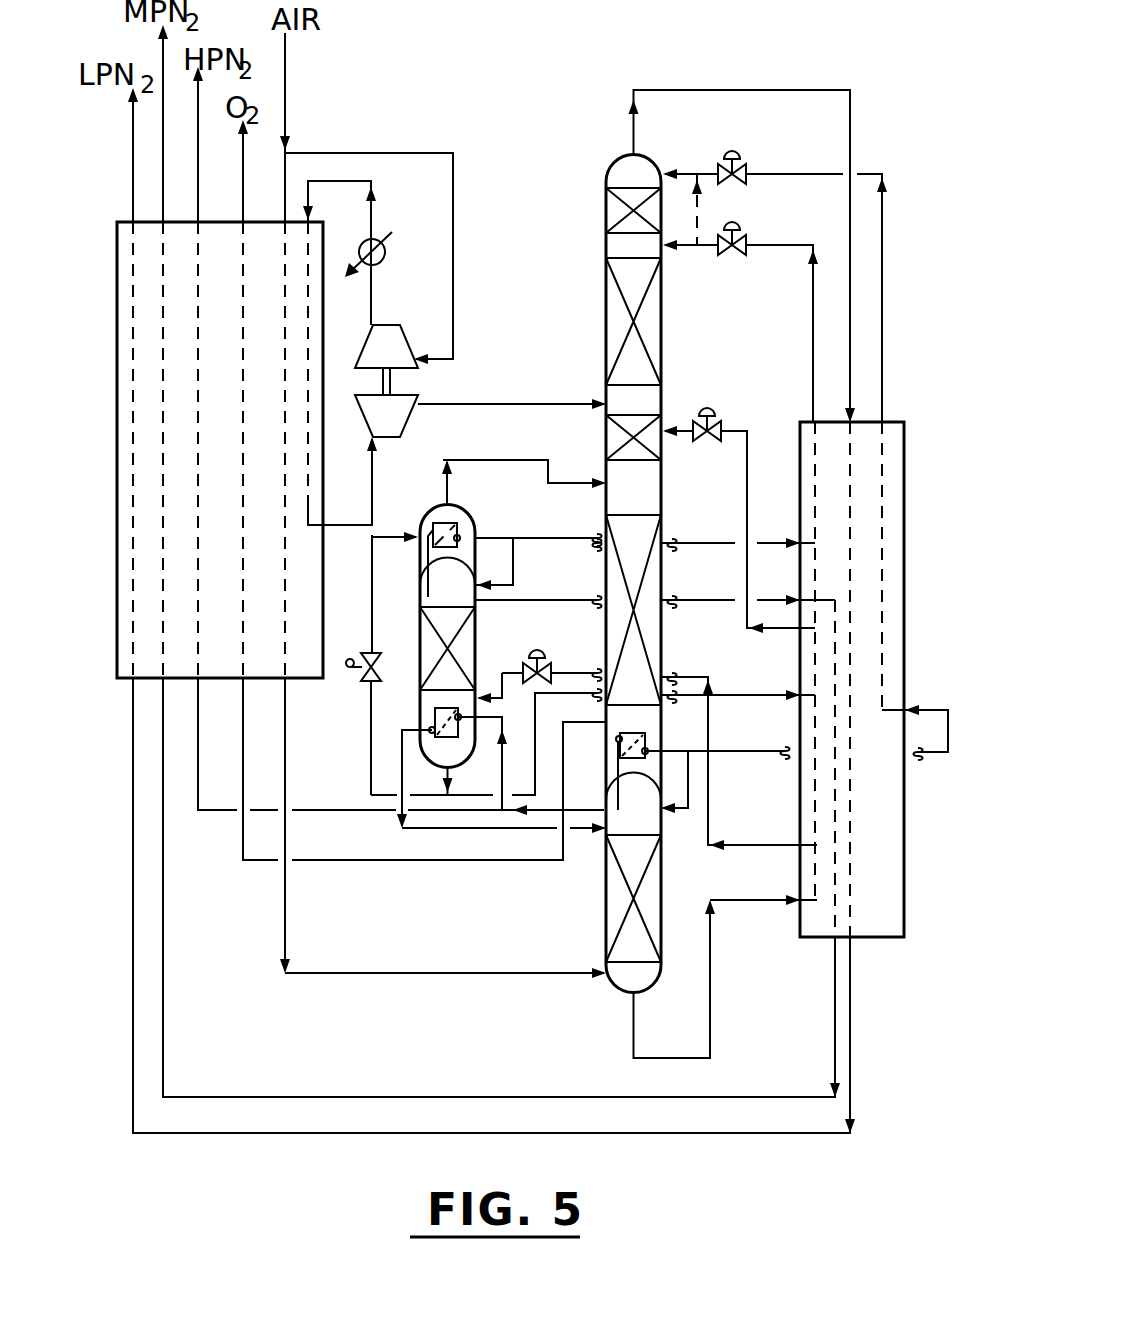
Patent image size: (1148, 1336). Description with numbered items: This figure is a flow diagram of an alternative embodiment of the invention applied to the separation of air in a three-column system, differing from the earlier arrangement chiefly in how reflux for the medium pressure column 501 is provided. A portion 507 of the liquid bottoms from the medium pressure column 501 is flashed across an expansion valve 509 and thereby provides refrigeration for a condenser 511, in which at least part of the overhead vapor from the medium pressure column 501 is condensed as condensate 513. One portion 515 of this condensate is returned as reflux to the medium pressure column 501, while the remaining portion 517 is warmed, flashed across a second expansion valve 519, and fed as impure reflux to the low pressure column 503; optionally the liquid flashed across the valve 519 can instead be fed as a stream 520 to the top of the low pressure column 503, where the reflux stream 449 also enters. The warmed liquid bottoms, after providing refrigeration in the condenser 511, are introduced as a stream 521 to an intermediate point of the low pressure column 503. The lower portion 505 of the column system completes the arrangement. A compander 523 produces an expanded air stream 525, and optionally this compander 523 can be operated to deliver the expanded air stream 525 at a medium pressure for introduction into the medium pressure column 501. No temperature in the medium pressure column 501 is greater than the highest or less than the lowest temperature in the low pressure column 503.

The reflux stream 449 is at (882, 345).
The medium pressure column 501 is at (478, 655).
The low pressure column 503 is at (661, 352).
The lower section of column 505 is at (604, 918).
The portion of liquid bottoms 507 is at (372, 776).
The expansion valve 509 is at (361, 676).
The condenser 511 is at (450, 520).
The condensate 513 is at (492, 540).
The portion of condensate 515 is at (513, 570).
The remaining portion of condensate 517 is at (697, 543).
The expansion valve 519 is at (735, 260).
The stream 520 is at (697, 212).
The stream 521 is at (518, 460).
The compander 523 is at (442, 385).
The expanded air stream 525 is at (558, 404).